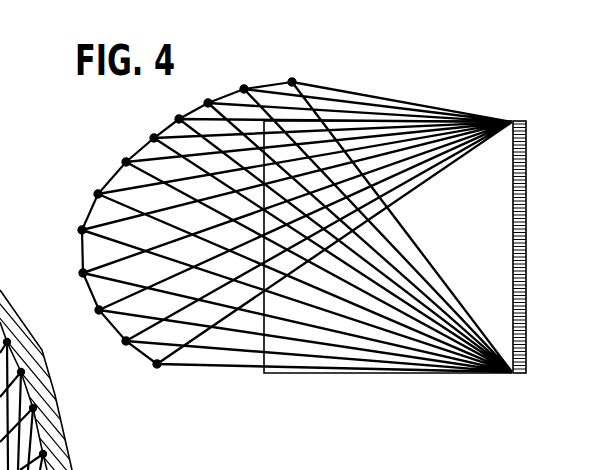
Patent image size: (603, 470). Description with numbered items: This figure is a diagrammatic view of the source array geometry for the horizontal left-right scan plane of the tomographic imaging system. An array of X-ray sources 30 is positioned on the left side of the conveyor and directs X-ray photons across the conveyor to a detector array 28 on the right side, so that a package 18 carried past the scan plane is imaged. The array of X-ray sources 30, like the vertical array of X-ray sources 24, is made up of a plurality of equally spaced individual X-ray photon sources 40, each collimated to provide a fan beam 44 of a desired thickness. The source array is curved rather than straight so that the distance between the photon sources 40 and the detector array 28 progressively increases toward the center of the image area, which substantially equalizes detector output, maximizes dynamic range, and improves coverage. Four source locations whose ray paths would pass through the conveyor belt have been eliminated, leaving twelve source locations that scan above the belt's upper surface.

The package 18 is at (264, 373).
The array of X-ray sources 24 is at (111, 344).
The detector array 28 is at (512, 218).
The array of X-ray sources 30 is at (147, 370).
The X-ray photon source 40 is at (126, 162).
The fan beam 44 is at (280, 100).